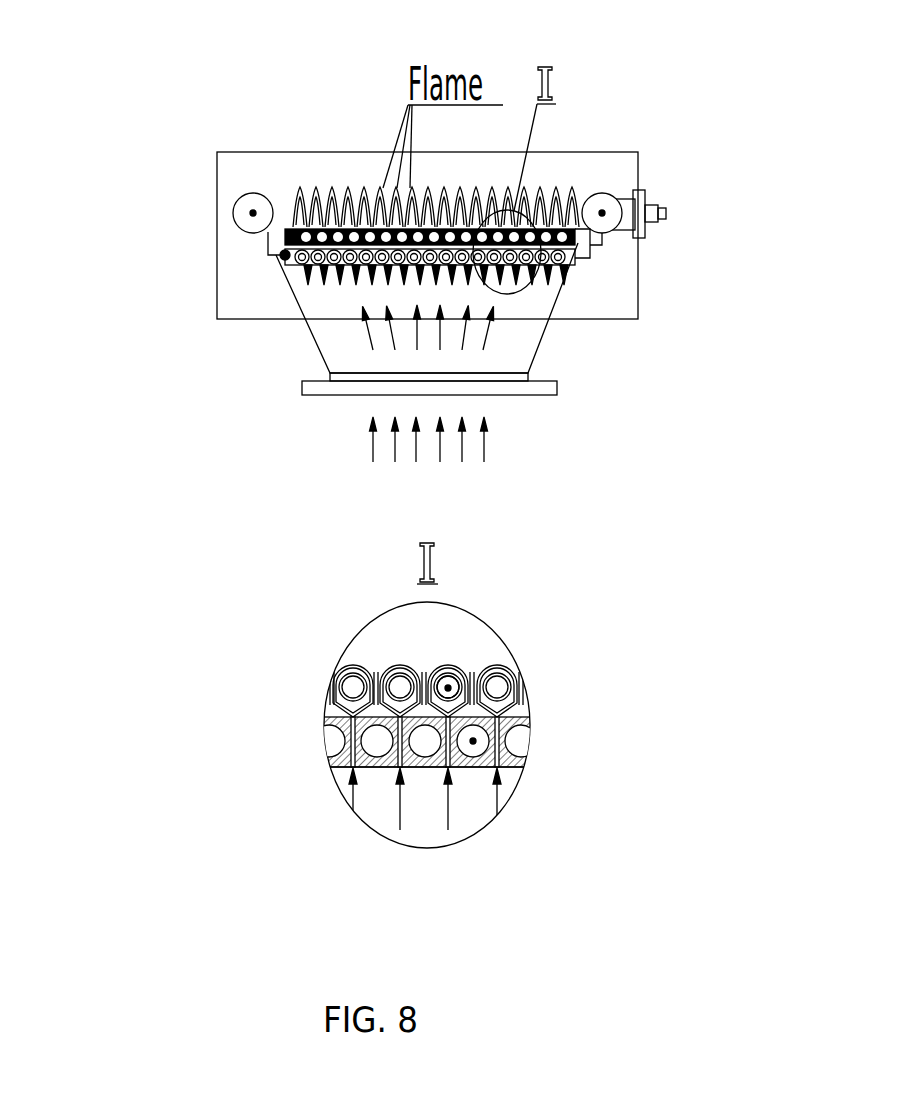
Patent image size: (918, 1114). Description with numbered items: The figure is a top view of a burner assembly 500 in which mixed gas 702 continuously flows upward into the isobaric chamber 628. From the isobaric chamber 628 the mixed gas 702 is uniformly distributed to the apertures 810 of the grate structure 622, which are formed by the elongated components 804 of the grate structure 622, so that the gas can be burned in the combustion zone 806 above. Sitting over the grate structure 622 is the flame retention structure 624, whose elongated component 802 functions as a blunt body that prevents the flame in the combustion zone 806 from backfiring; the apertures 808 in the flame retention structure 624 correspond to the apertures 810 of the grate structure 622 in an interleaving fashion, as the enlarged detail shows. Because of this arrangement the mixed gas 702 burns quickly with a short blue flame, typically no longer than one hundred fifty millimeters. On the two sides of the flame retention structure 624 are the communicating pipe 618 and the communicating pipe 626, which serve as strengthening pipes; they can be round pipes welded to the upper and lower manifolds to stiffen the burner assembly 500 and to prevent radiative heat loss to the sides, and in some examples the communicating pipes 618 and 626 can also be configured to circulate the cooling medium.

The burner assembly 500 is at (87, 27).
The communicating pipe 618 is at (253, 213).
The communicating pipe 626 is at (602, 213).
The combustion zone 806 is at (325, 167).
The flame retention structure 624 is at (285, 241).
The grate structure 622 is at (285, 255).
The isobaric chamber 628 is at (336, 320).
The mixed gas 702 is at (425, 625).
The apertures 808 is at (373, 667).
The elongated component 802 is at (448, 688).
The elongated components 804 is at (473, 741).
The apertures 810 is at (398, 765).